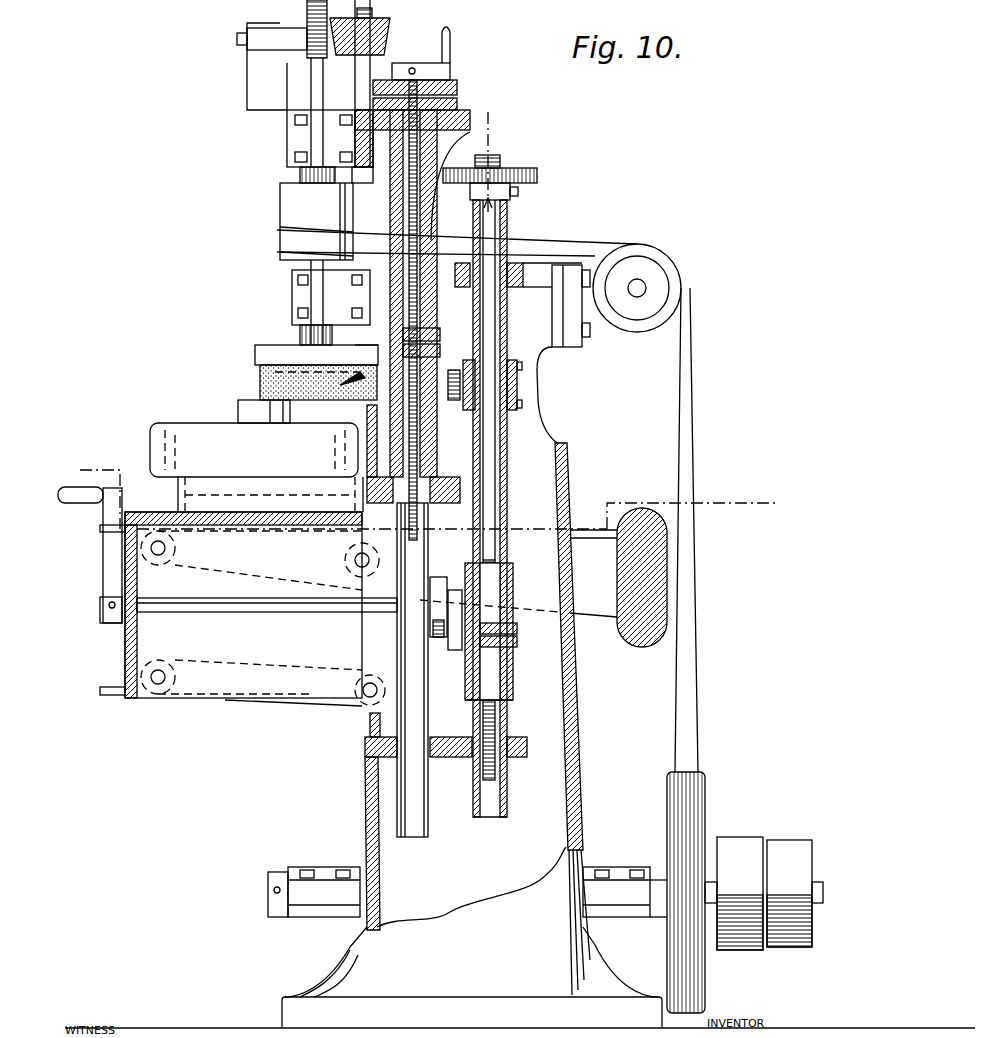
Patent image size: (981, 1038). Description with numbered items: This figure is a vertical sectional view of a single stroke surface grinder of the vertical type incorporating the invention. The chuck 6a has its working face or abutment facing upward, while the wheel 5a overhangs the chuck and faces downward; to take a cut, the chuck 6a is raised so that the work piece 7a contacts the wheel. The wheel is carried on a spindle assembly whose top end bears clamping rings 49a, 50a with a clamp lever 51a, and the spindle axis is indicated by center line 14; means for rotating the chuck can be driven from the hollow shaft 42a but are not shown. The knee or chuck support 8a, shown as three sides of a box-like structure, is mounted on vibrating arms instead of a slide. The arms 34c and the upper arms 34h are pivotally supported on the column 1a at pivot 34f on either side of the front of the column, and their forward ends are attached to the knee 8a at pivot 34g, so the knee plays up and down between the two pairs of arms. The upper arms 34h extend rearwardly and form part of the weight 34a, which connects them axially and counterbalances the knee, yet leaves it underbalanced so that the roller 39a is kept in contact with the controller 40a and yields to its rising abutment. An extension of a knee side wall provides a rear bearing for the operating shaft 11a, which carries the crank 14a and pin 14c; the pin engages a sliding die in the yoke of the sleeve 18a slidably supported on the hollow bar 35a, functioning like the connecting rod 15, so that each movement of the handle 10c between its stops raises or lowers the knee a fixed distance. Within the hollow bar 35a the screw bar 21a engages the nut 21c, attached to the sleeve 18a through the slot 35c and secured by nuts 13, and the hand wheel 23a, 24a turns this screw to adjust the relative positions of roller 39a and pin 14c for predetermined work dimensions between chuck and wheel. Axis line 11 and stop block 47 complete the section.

The clamp lever 51a is at (441, 30).
The clamping ring 49a is at (457, 86).
The clamping ring 50a is at (457, 104).
The axis of spindle 14 is at (488, 166).
The connecting rod 15 is at (403, 335).
The wheel 5a is at (260, 378).
The wedge 47 is at (351, 385).
The work piece 7a is at (238, 410).
The chuck 6a is at (256, 467).
The controller 40a is at (460, 450).
The hand wheel 24a is at (537, 172).
The hand wheel 23a is at (518, 189).
The hollow bar 35a is at (505, 815).
The screw bar 21a is at (495, 722).
The roller 39a is at (475, 368).
The slot 35c is at (513, 676).
The nuts 13 is at (517, 641).
The sleeve 18a is at (513, 698).
The nut 21c is at (500, 610).
The crank 14a is at (440, 578).
The pin 14c is at (450, 633).
The pivot 34f is at (372, 725).
The hollow shaft 42a is at (397, 790).
The weight 34a is at (650, 640).
The upper arms 34h is at (586, 527).
The axis line 11 is at (429, 496).
The knee 8a is at (190, 695).
The operating shaft 11a is at (288, 612).
The pivot 34g is at (158, 680).
The arms 34c is at (312, 703).
The handle 10c is at (75, 500).
The column 1a is at (525, 958).